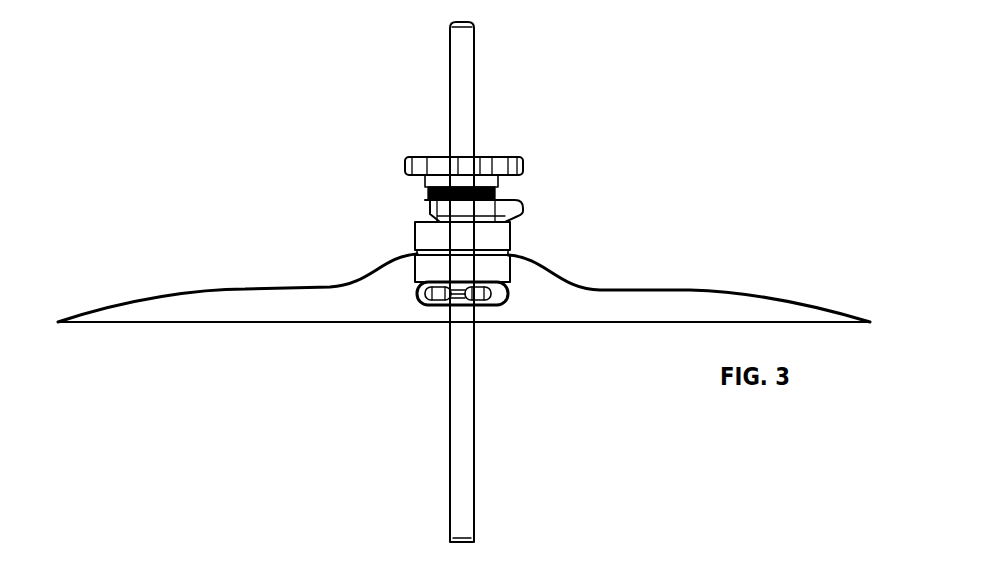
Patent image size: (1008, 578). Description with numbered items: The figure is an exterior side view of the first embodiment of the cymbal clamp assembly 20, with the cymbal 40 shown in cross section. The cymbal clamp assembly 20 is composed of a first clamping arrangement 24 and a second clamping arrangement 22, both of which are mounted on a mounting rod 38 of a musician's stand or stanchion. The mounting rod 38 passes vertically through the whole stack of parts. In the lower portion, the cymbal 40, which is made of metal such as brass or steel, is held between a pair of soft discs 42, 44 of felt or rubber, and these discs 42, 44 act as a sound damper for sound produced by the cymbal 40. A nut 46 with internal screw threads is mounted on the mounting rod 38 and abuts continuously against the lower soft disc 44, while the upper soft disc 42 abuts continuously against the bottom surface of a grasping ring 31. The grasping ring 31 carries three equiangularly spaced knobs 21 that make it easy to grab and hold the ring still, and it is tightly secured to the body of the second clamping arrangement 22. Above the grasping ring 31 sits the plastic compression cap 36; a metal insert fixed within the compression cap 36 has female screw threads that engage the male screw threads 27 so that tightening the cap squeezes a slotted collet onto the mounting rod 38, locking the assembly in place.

The cymbal clamp assembly 20 is at (565, 202).
The knobs 21 is at (467, 172).
The second clamping arrangement 22 is at (443, 141).
The first clamping arrangement 24 is at (447, 346).
The male screw threads 27 is at (430, 193).
The grasping ring 31 is at (432, 222).
The plastic compression cap 36 is at (440, 158).
The mounting rod 38 is at (462, 108).
The cymbal 40 is at (682, 302).
The soft disc 42 is at (495, 240).
The soft disc 44 is at (502, 265).
The nut 46 is at (417, 290).